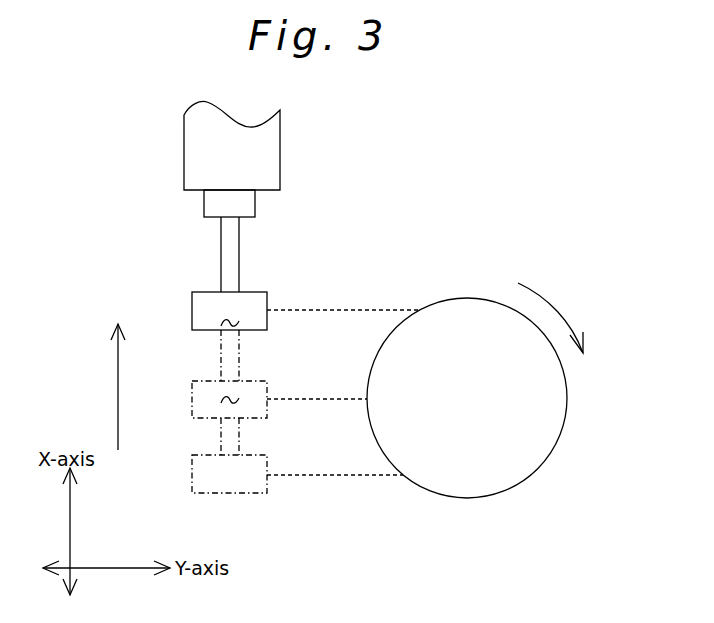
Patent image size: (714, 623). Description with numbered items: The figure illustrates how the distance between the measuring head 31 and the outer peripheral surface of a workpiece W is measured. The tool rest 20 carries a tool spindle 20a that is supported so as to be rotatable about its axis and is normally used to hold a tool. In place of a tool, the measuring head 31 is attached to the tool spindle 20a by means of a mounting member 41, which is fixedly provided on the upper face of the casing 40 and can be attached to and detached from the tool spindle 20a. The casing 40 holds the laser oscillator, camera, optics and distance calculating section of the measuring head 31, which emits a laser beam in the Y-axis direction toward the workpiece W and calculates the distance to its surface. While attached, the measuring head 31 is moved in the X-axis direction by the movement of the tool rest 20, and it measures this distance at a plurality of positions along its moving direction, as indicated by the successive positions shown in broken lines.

The tool rest 20 is at (192, 155).
The tool spindle 20a is at (207, 205).
The mounting member 41 is at (233, 248).
The casing 40 is at (198, 303).
The measuring head 31 is at (280, 291).
The workpiece W is at (470, 305).